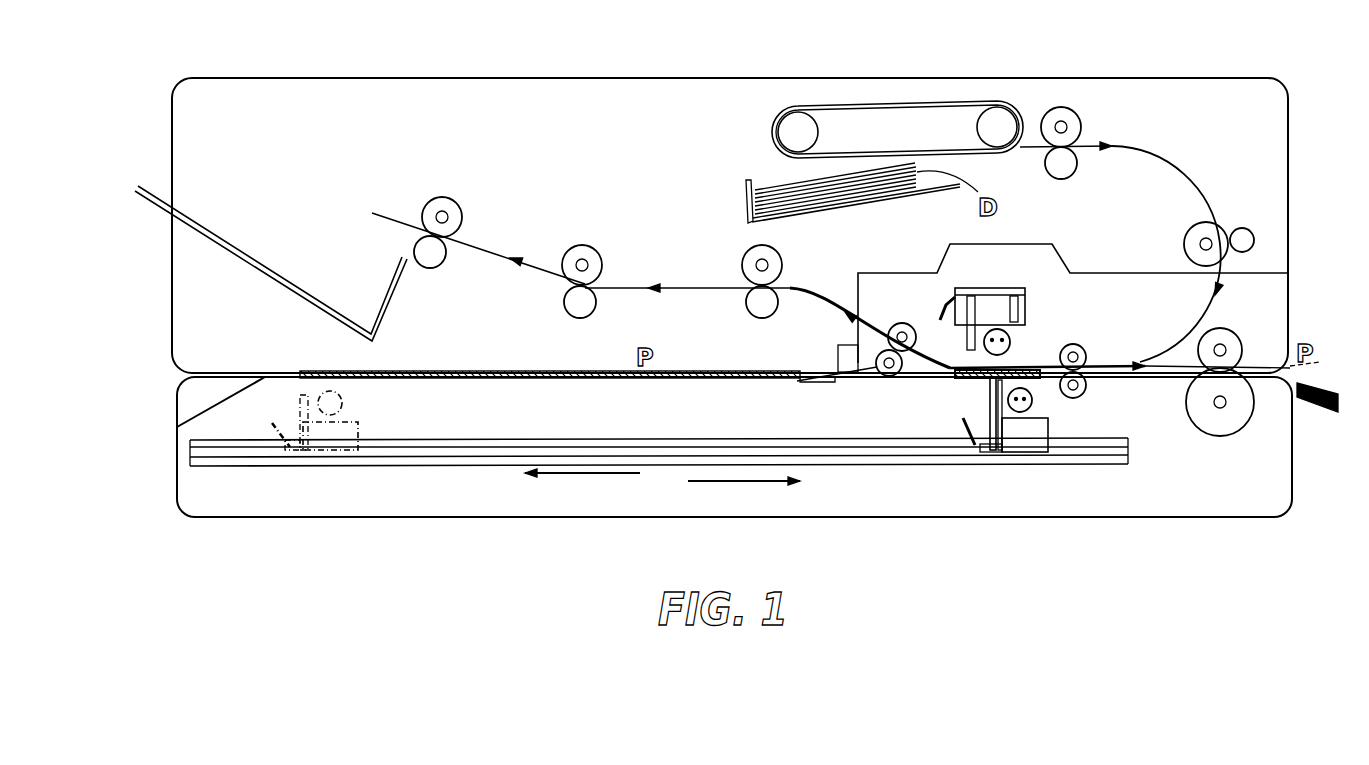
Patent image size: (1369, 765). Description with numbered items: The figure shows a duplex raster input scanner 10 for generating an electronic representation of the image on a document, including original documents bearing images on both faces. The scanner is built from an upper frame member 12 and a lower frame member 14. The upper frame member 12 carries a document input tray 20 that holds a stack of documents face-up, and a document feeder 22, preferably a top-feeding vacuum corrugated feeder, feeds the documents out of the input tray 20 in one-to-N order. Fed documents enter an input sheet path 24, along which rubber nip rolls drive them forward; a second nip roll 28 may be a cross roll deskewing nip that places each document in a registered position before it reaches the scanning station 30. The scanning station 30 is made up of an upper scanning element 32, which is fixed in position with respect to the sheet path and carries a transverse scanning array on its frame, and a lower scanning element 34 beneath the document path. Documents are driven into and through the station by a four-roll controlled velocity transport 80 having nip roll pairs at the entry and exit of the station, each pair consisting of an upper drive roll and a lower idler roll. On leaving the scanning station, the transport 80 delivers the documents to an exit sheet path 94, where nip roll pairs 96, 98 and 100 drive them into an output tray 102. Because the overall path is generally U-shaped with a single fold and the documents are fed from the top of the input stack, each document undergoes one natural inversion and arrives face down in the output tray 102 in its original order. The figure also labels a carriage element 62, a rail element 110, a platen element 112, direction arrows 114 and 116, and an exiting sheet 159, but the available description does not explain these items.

The raster input scanner 10 is at (553, 43).
The upper frame member 12 is at (650, 78).
The lower frame member 14 is at (1292, 478).
The document input tray 20 is at (748, 192).
The document feeder 22 is at (915, 105).
The input sheet path 24 is at (1175, 152).
The second nip roll 28 is at (1243, 228).
The scanning station 30 is at (1095, 272).
The upper scanning element 32 is at (1030, 330).
The lower scanning element 34 is at (1045, 402).
The carriage 62 is at (1033, 440).
The Controlled Velocity Transport arrangement 80 is at (968, 380).
The exit sheet path 94 is at (818, 290).
The nip roll pair 96 is at (742, 262).
The nip roll pair 98 is at (598, 262).
The nip roll pair 100 is at (460, 215).
The output tray 102 is at (397, 285).
The carriage rail 110 is at (737, 440).
The platen 112 is at (560, 379).
The carriage direction arrow 114 is at (580, 474).
The carriage direction arrow 116 is at (700, 482).
The output sheet 159 is at (1318, 378).